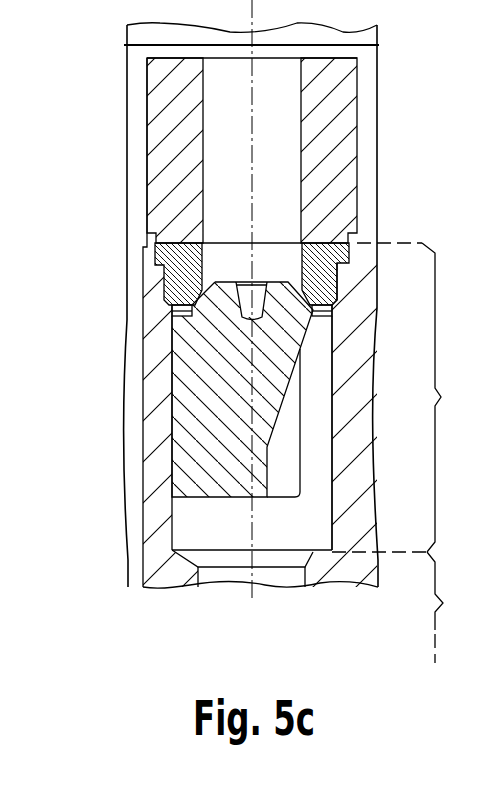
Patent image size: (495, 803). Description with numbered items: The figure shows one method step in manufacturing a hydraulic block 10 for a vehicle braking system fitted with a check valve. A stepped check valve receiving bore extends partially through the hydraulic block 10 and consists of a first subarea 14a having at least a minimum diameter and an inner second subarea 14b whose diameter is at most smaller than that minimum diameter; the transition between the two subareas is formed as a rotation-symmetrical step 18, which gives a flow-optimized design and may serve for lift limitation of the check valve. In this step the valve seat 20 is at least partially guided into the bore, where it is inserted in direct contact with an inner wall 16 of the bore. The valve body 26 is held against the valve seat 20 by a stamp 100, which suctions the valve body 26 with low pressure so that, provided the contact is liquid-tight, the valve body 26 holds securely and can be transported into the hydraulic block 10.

The hydraulic block 10 is at (155, 429).
The first subarea 14a is at (411, 397).
The second subarea 14b is at (460, 607).
The inner wall 16 is at (320, 424).
The step 18 is at (177, 550).
The valve seat 20 is at (155, 252).
The valve body 26 is at (212, 362).
The stamp 100 is at (168, 128).